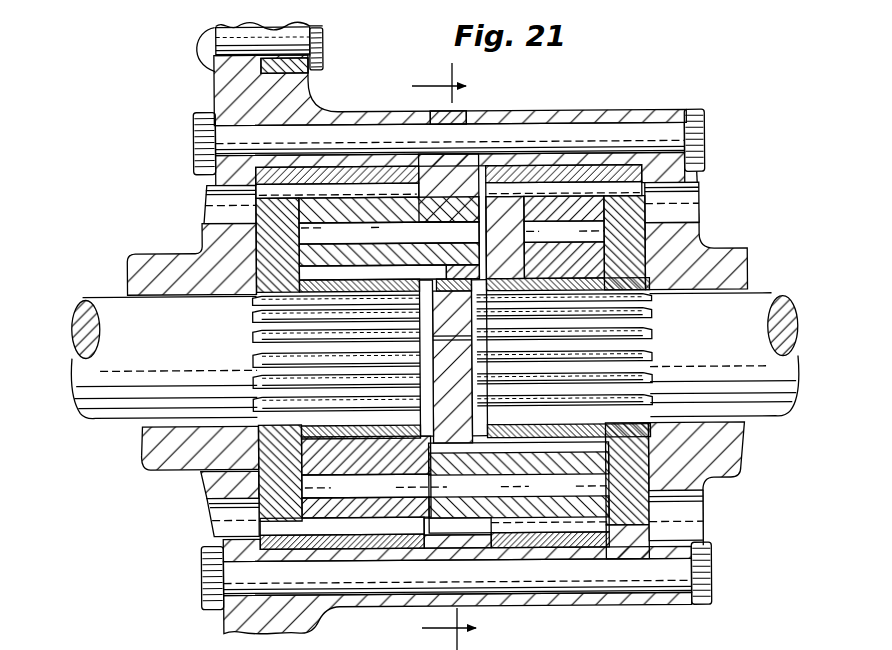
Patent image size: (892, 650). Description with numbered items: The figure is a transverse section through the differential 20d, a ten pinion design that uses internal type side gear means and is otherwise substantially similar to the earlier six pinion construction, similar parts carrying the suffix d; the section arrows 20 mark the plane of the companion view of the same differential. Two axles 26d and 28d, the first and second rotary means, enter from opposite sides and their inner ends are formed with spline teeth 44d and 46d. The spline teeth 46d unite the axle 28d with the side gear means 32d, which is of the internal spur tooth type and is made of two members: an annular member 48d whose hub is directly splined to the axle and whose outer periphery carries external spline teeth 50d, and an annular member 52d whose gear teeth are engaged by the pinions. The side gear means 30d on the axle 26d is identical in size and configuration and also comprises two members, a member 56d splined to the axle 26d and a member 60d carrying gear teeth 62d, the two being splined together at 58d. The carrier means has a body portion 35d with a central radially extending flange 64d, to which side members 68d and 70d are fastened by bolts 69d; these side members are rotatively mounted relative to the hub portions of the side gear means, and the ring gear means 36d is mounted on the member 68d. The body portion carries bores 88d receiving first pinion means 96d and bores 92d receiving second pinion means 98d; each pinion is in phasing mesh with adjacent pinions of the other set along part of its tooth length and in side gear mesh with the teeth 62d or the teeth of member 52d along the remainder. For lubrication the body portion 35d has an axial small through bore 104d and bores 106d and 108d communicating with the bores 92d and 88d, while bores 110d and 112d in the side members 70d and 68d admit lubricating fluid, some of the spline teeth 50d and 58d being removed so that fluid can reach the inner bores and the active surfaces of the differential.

The section line 20 is at (444, 356).
The differential 20d is at (740, 152).
The axle 26d is at (760, 375).
The axle 28d is at (128, 333).
The side gear means 30d is at (632, 487).
The side gear means 32d is at (282, 458).
The body portion 35d is at (453, 295).
The ring gear means 36d is at (328, 61).
The spline teeth 44d is at (622, 329).
The spline teeth 46d is at (290, 358).
The annular member 48d is at (280, 244).
The external spline teeth 50d is at (291, 528).
The annular member 52d is at (343, 545).
The member 56d is at (630, 460).
The spline connection 58d is at (630, 523).
The member 60d is at (603, 535).
The gear teeth 62d is at (543, 188).
The flange 64d is at (455, 119).
The side member 68d is at (363, 117).
The bolts 69d is at (582, 573).
The side member 70d is at (632, 132).
The bores 88d is at (497, 441).
The bores 92d is at (321, 280).
The first pinion means 96d is at (533, 462).
The second pinion means 98d is at (386, 212).
The axial through bore 104d is at (450, 341).
The bore 106d is at (528, 221).
The bore 108d is at (338, 478).
The bore 110d is at (685, 215).
The bore 112d is at (224, 525).